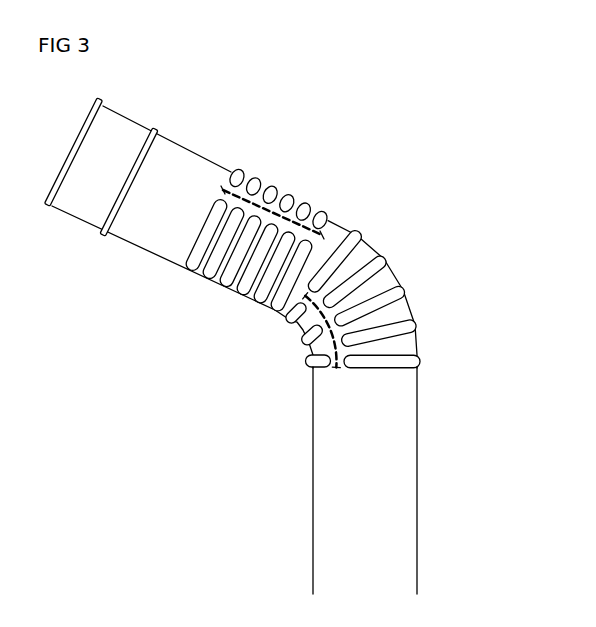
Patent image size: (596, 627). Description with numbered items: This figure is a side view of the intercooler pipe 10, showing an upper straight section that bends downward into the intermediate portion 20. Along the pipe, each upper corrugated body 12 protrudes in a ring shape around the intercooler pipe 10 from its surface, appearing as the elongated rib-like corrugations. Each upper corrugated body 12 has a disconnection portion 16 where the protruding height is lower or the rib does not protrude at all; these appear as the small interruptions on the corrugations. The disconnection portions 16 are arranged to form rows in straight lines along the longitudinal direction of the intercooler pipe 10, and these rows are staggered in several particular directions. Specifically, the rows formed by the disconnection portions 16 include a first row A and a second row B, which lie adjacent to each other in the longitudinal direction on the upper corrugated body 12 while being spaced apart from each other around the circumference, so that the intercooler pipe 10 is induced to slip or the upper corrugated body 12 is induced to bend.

The intercooler pipe 10 is at (397, 208).
The upper corrugated body 12 is at (252, 187).
The disconnection portion 16 is at (224, 190).
The intermediate portion 20 is at (413, 513).
The first row A is at (278, 209).
The second row B is at (309, 350).